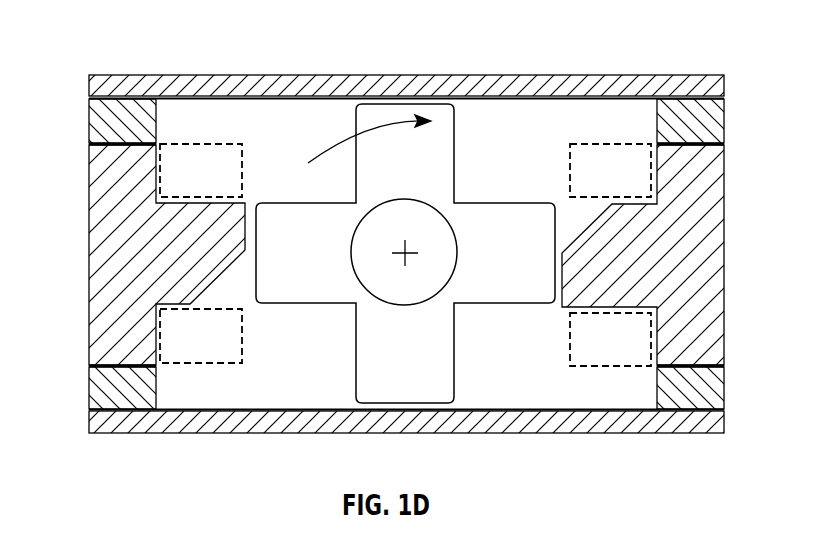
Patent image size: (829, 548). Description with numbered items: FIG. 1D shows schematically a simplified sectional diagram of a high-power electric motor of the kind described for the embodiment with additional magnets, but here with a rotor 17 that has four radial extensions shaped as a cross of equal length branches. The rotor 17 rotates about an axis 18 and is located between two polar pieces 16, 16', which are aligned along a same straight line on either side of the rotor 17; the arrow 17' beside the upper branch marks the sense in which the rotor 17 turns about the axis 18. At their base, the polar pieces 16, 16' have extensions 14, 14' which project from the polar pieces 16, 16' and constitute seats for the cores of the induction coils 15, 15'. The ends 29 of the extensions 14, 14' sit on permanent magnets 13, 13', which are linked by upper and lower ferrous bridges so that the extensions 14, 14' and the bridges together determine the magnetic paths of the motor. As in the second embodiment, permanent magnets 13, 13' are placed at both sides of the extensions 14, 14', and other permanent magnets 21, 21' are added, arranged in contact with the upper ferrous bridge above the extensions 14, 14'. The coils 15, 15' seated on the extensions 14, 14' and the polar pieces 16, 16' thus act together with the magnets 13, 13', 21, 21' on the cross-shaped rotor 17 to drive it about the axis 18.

The permanent magnet 13 is at (720, 387).
The permanent magnet 13' is at (92, 386).
The extension 14 is at (672, 255).
The extension 14' is at (136, 255).
The induction coil 15 is at (617, 396).
The induction coil 15' is at (188, 394).
The polar piece 16 is at (583, 122).
The polar piece 16' is at (167, 121).
The rotor 17 is at (418, 292).
The direction of rotation of rotor 17' is at (369, 93).
The axis 18 is at (413, 260).
The permanent magnet 21 is at (720, 119).
The permanent magnet 21' is at (92, 119).
The end of the extension 29 is at (693, 185).